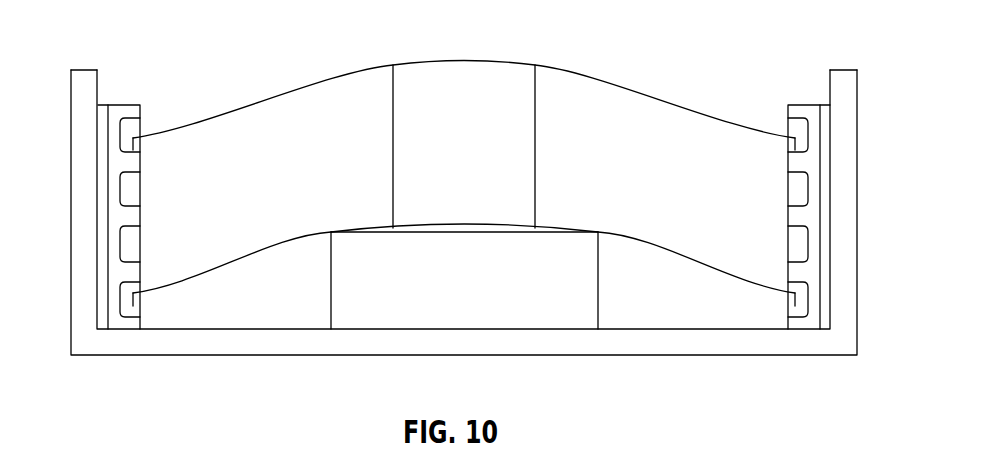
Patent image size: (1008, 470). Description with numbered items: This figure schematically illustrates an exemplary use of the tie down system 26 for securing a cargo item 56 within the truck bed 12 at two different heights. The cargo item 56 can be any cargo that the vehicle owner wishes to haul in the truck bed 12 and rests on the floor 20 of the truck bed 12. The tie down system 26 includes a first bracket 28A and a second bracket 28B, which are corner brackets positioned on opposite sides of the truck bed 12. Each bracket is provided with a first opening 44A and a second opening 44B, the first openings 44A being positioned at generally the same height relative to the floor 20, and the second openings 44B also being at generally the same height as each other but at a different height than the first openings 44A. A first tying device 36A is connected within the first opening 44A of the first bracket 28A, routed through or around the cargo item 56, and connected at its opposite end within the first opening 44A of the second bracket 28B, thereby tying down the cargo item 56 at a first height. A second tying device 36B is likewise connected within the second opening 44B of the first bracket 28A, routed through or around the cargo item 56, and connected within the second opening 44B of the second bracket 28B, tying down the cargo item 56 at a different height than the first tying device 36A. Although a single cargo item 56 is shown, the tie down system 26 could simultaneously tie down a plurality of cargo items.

The truck bed 12 is at (682, 79).
The floor 20 is at (656, 328).
The tie down system 26 is at (123, 87).
The first bracket 28A is at (117, 163).
The second bracket 28B is at (810, 214).
The first tying device 36A is at (321, 83).
The second tying device 36B is at (263, 251).
The first opening 44A is at (129, 125).
The second opening 44B is at (130, 288).
The cargo item 56 is at (537, 146).